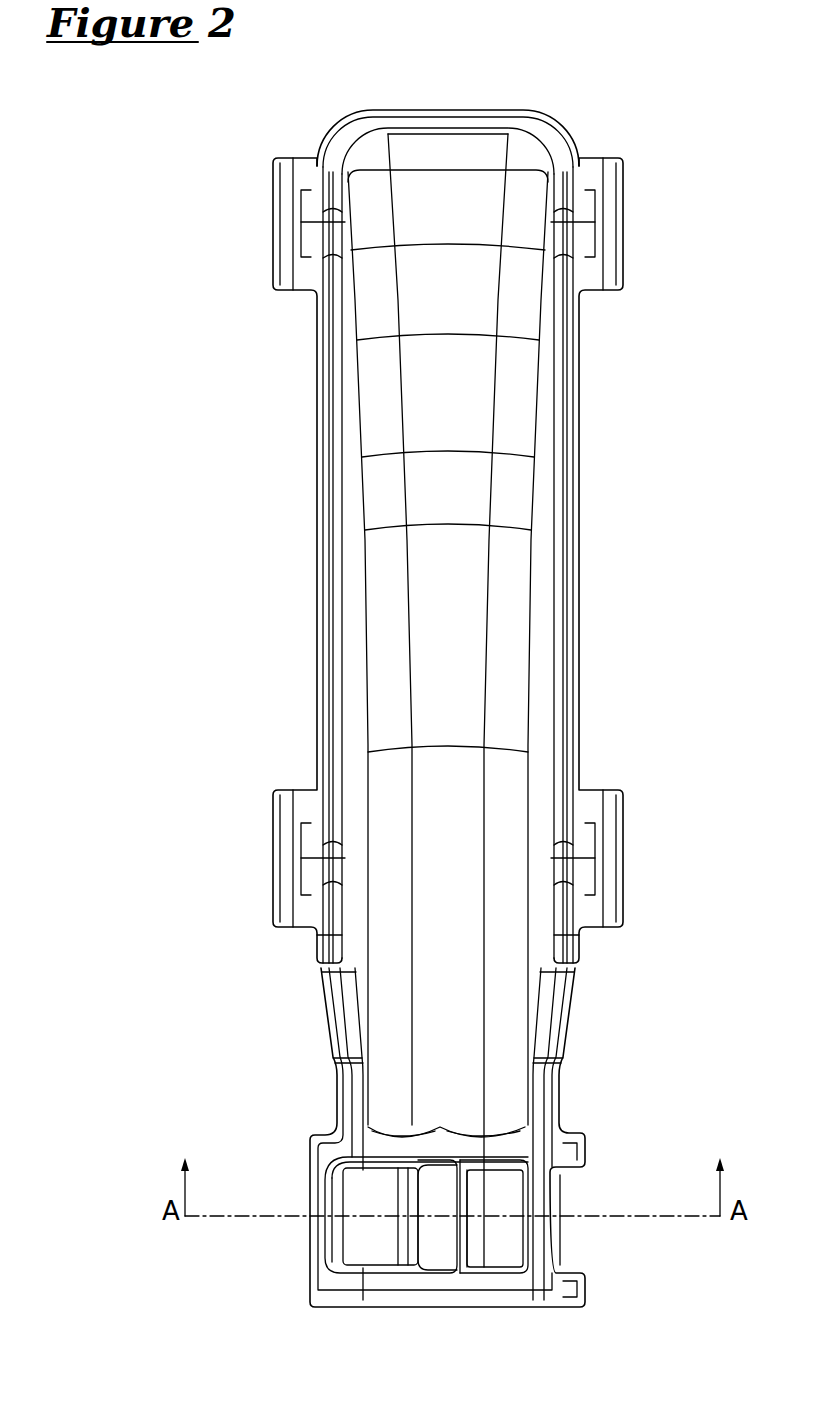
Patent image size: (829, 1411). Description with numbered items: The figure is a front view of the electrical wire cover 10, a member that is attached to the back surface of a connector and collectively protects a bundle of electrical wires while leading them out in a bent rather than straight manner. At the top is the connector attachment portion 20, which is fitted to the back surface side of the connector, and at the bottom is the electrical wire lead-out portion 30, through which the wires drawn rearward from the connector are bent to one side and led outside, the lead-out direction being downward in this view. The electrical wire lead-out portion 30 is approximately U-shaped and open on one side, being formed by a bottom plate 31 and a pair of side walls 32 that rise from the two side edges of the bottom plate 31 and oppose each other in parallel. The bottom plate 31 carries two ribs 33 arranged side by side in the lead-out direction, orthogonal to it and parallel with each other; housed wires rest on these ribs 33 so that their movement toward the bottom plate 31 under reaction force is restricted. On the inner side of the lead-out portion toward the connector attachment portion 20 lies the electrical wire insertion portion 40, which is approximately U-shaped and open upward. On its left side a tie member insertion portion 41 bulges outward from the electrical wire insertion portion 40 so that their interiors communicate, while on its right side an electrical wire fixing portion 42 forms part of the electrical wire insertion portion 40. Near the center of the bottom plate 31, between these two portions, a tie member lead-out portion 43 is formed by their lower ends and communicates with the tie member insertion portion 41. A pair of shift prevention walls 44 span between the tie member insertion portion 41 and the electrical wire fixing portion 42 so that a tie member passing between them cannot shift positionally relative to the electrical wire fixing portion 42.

The electrical wire cover 10 is at (446, 104).
The connector attachment portion 20 is at (606, 556).
The electrical wire lead-out portion 30 is at (502, 1164).
The bottom plate 31 is at (474, 1233).
The side walls 32 is at (322, 1172).
The ribs 33 is at (435, 1146).
The electrical wire insertion portion 40 is at (441, 1188).
The tie member insertion portion 41 is at (352, 1233).
The electrical wire fixing portion 42 is at (515, 1233).
The tie member lead-out portion 43 is at (424, 1233).
The shift prevention walls 44 is at (572, 1148).